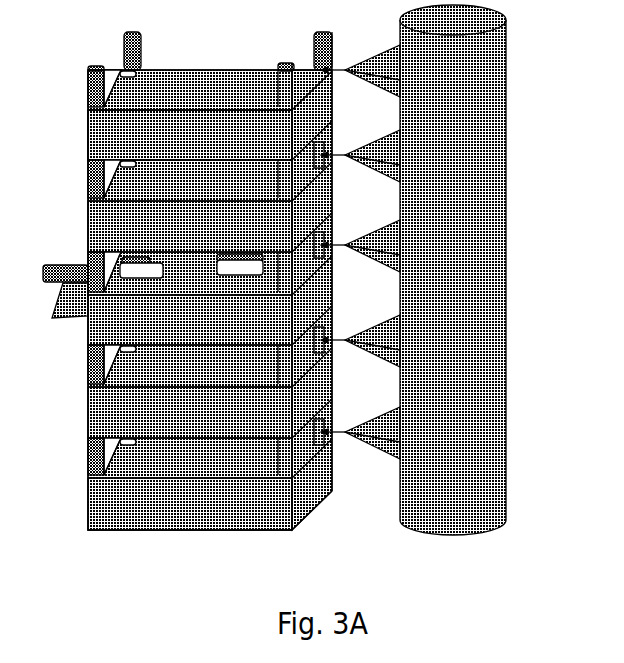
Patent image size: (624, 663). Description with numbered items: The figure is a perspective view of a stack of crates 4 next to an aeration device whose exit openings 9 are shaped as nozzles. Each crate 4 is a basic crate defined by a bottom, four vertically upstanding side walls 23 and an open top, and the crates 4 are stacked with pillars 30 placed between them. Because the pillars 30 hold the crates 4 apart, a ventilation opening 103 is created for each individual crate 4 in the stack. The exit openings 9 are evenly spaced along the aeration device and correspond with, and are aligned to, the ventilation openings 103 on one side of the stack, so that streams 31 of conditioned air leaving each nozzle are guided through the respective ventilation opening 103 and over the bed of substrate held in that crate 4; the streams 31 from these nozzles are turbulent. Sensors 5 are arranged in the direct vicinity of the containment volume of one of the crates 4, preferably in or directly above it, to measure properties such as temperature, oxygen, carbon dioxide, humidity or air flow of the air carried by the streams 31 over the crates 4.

The ventilation opening 103 is at (200, 64).
The pillar 30 is at (137, 53).
The crate 4 is at (108, 237).
The side wall 23 is at (206, 132).
The sensor 5 is at (232, 276).
The stream of conditioned air 31 is at (335, 242).
The exit opening 9 is at (386, 52).